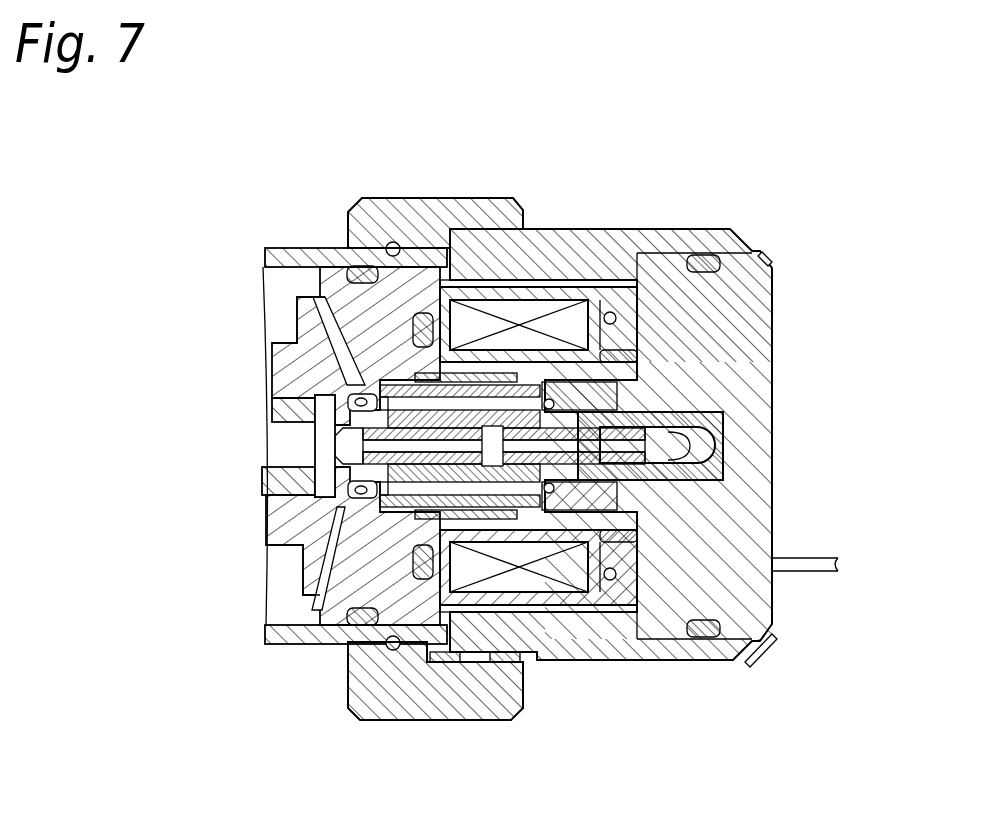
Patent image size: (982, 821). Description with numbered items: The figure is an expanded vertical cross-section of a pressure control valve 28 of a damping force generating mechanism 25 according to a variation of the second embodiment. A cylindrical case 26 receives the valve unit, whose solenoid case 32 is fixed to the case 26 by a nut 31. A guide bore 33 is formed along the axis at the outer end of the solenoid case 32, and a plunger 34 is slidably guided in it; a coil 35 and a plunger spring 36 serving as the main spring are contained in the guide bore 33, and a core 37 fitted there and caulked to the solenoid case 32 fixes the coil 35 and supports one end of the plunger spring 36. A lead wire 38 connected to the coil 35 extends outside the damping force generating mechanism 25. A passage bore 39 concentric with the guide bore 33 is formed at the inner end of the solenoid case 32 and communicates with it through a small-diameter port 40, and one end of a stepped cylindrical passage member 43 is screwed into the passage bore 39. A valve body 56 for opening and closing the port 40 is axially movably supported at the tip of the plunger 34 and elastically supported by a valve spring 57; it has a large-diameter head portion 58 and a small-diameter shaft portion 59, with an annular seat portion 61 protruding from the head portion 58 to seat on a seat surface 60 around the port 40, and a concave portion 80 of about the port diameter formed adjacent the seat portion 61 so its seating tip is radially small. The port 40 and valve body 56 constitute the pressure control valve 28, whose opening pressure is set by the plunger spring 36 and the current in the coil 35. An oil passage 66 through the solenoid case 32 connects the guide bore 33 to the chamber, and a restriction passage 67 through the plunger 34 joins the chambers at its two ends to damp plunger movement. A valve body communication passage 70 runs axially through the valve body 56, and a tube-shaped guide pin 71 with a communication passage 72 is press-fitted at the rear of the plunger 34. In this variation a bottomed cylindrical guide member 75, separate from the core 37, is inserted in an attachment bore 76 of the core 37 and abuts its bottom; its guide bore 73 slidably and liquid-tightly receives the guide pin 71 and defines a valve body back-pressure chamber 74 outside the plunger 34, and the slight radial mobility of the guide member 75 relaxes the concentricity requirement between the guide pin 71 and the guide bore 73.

The damping force generating mechanism 25 is at (747, 213).
The case 26 is at (300, 250).
The pressure control valve 28 is at (323, 503).
The nut 31 is at (480, 215).
The solenoid case 32 is at (636, 240).
The guide bore 33 is at (330, 600).
The plunger 34 is at (515, 372).
The coil 35 is at (550, 600).
The plunger spring 36 is at (600, 392).
The core 37 is at (727, 306).
The lead wire 38 is at (805, 570).
The passage bore 39 is at (355, 397).
The port 40 is at (338, 446).
The passage member 43 is at (277, 477).
The valve body 56 is at (378, 262).
The valve spring 57 is at (422, 315).
The head portion 58 is at (362, 640).
The shaft portion 59 is at (400, 385).
The seat surface 60 is at (283, 597).
The annular seat portion 61 is at (307, 330).
The oil passage 66 is at (335, 300).
The restriction passage 67 is at (545, 325).
The valve body communication passage 70 is at (548, 600).
The guide pin 71 is at (747, 642).
The communication passage 72 is at (665, 560).
The guide bore 73 is at (695, 458).
The valve body back-pressure chamber 74 is at (690, 437).
The guide member 75 is at (768, 640).
The attachment bore 76 is at (705, 440).
The concave portion 80 is at (310, 412).